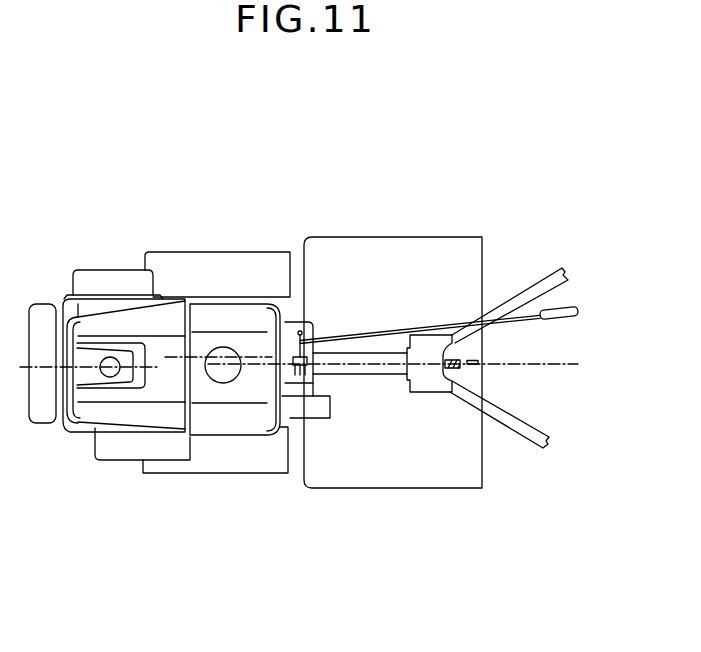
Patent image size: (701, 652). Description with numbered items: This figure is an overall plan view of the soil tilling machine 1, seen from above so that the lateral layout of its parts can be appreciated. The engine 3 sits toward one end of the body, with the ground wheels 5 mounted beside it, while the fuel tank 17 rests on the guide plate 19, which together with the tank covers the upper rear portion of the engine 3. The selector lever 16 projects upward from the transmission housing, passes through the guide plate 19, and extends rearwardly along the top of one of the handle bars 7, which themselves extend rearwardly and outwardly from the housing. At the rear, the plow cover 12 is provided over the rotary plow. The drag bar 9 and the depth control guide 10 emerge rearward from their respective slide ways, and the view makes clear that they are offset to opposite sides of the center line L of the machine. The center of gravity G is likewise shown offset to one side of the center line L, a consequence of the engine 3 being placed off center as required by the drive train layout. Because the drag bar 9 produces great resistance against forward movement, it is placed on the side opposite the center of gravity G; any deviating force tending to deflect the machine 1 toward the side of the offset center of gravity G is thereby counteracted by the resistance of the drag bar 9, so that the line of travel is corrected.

The soil tilling machine 1 is at (203, 193).
The engine 3 is at (148, 400).
The ground wheels 5 is at (272, 467).
The handle bars 7 is at (535, 292).
The drag bar 9 is at (448, 382).
The tilling depth control guide 10 is at (483, 357).
The plow cover 12 is at (415, 480).
The selector lever 16 is at (378, 330).
The fuel tank 17 is at (228, 400).
The guide plate 19 is at (313, 378).
The center of gravity G is at (203, 357).
The center line L is at (567, 360).